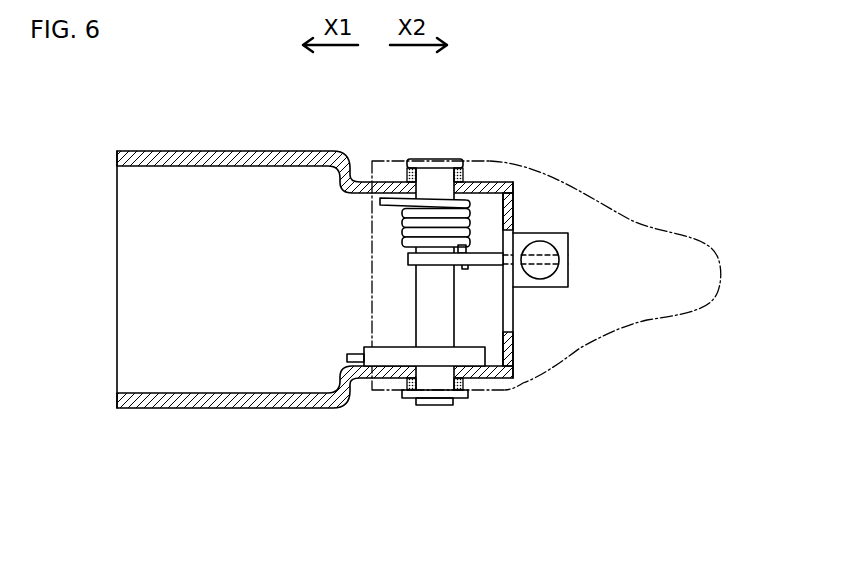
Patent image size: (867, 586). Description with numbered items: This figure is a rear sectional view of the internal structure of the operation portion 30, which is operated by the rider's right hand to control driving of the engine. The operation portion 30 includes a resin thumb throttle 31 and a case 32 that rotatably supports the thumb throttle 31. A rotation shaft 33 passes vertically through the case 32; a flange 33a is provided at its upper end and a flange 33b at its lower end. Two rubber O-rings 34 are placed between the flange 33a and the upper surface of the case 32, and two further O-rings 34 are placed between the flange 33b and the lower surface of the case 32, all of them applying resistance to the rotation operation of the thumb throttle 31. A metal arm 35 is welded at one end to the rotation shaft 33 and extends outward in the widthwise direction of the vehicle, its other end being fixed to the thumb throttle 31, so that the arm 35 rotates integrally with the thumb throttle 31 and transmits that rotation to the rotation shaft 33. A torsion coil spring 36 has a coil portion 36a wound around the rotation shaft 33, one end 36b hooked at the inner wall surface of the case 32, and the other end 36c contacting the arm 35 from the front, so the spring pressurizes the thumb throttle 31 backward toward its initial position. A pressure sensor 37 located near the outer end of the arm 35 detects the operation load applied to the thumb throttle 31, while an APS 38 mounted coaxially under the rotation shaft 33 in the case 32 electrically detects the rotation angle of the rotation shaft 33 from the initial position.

The operation portion 30 is at (640, 382).
The thumb throttle 31 is at (657, 223).
The case 32 is at (217, 151).
The rotation shaft 33 is at (487, 267).
The flange 33a is at (422, 159).
The flange 33b is at (414, 404).
The O-rings 34 is at (462, 172).
The arm 35 is at (442, 315).
The torsion coil spring 36 is at (512, 195).
The coil portion 36a is at (405, 250).
The one end 36b is at (400, 199).
The other end 36c is at (467, 247).
The pressure sensor 37 is at (570, 233).
The APS 38 is at (390, 357).